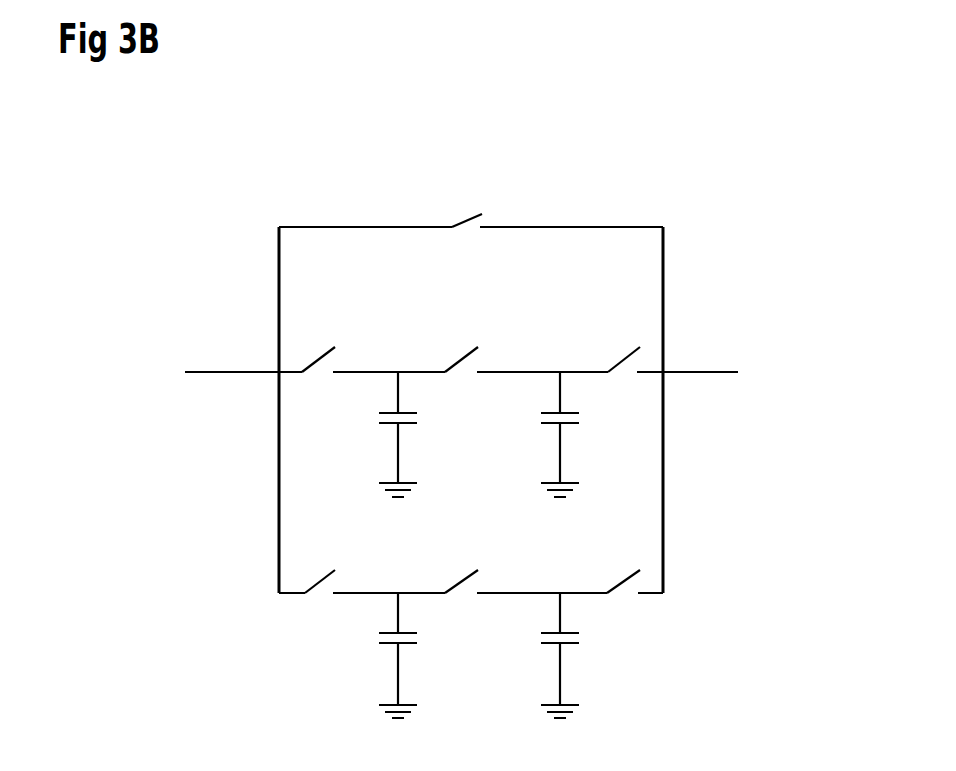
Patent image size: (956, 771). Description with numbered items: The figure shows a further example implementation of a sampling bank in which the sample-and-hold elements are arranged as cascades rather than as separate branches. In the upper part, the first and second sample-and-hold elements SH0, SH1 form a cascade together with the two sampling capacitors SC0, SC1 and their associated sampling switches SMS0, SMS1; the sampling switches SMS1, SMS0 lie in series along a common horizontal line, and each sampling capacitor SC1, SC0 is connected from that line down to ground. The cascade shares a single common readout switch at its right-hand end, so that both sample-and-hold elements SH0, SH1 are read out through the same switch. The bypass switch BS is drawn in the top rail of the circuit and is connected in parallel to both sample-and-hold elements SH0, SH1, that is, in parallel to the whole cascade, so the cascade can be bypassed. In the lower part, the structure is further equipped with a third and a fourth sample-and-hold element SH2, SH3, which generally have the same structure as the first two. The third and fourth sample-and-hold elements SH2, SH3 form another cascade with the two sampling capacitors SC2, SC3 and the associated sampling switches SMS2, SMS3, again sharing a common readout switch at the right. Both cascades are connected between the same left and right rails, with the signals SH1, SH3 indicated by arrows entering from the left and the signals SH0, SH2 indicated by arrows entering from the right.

The bypass switch BS is at (465, 198).
The sampling switch SMS1 is at (341, 339).
The sampling switch SMS0 is at (471, 339).
The sampling switch SMS3 is at (344, 563).
The sampling switch SMS2 is at (471, 563).
The sampling capacitor SC1 is at (363, 393).
The sampling capacitor SC0 is at (525, 395).
The sampling capacitor SC3 is at (368, 618).
The sampling capacitor SC2 is at (532, 618).
The sample-and-hold element SH1 is at (232, 432).
The sample-and-hold element SH0 is at (695, 432).
The sample-and-hold element SH3 is at (232, 652).
The sample-and-hold element SH2 is at (695, 652).